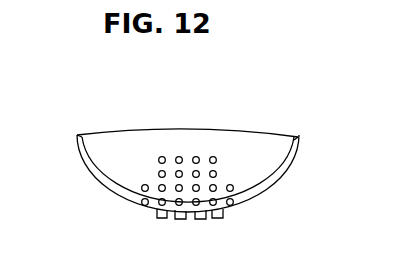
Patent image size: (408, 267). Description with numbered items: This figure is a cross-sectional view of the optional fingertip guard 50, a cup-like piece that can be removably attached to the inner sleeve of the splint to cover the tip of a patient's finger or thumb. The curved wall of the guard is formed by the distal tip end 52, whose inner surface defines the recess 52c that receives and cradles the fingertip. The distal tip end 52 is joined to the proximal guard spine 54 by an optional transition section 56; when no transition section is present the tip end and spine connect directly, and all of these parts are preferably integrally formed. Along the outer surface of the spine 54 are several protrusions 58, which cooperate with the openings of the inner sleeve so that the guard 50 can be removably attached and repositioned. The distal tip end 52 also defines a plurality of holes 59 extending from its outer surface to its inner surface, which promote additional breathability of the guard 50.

The fingertip guard 50 is at (123, 106).
The distal tip end 52 is at (95, 178).
The recess 52c is at (247, 157).
The proximal guard spine 54 is at (171, 213).
The transition section 56 is at (140, 206).
The protrusions 58 is at (200, 219).
The holes 59 is at (181, 157).